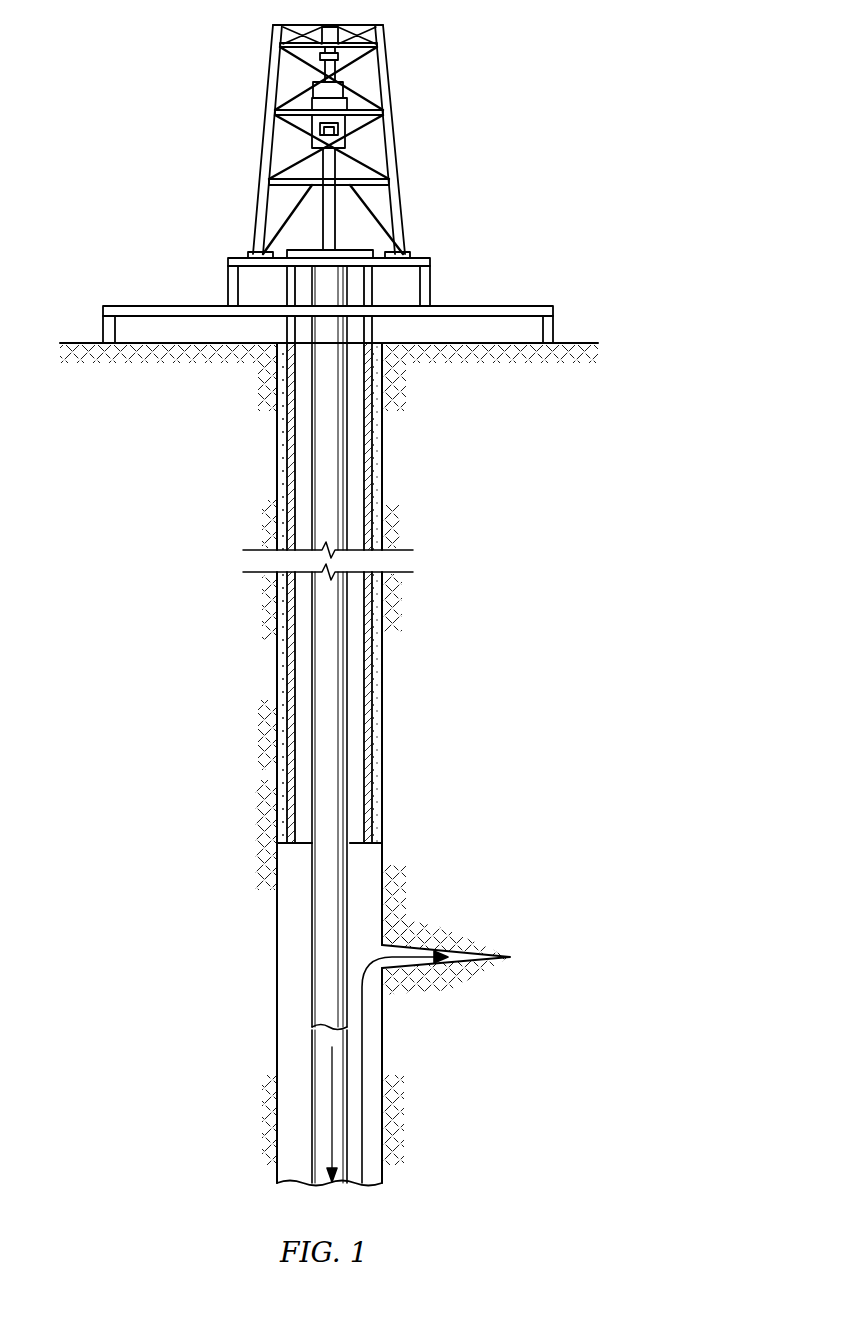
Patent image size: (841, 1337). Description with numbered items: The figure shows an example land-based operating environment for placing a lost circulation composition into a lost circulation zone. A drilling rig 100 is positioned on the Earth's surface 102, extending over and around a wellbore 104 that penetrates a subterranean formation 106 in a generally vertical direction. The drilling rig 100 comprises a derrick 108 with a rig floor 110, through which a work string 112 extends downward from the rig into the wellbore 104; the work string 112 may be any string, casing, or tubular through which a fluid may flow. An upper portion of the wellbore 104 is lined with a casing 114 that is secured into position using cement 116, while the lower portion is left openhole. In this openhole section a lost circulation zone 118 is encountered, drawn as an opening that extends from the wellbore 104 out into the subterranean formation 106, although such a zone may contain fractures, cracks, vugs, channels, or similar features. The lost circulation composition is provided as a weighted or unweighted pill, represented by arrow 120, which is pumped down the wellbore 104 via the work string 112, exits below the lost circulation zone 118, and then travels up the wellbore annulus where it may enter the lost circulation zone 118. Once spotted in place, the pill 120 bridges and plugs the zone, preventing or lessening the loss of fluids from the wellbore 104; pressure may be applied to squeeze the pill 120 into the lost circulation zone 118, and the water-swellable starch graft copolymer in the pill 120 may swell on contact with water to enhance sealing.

The drilling rig 100 is at (503, 122).
The Earth's surface 102 is at (577, 343).
The wellbore 104 is at (277, 463).
The subterranean formation 106 is at (420, 356).
The derrick 108 is at (270, 75).
The rig floor 110 is at (143, 305).
The work string 112 is at (347, 687).
The casing 114 is at (292, 724).
The cement 116 is at (277, 768).
The lost circulation zone 118 is at (517, 951).
The arrow (pill) 120 is at (363, 1093).